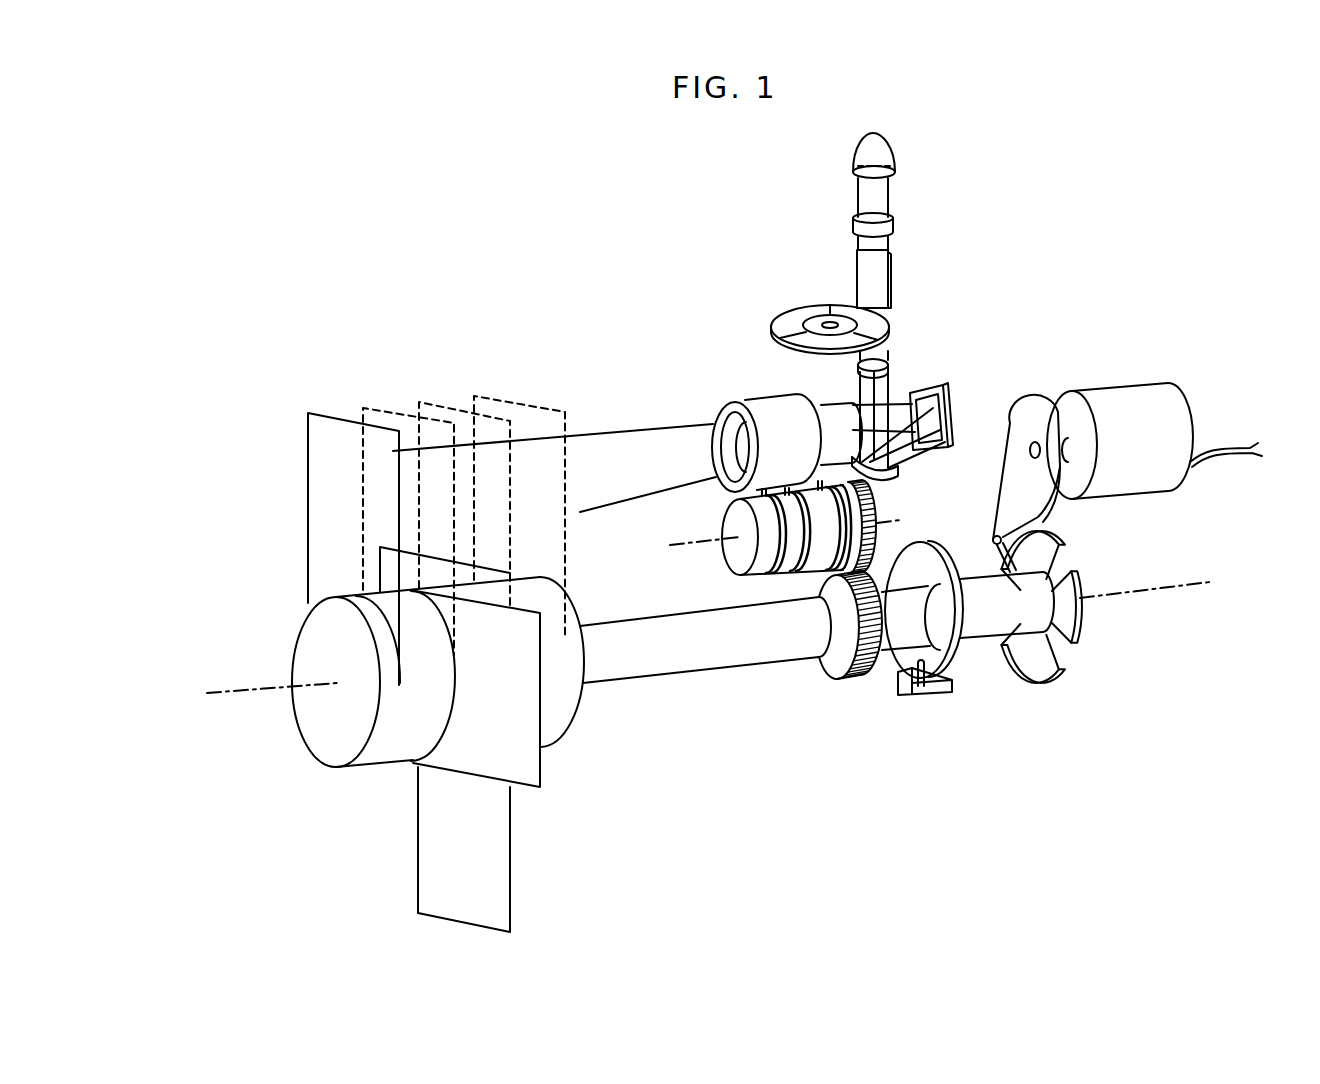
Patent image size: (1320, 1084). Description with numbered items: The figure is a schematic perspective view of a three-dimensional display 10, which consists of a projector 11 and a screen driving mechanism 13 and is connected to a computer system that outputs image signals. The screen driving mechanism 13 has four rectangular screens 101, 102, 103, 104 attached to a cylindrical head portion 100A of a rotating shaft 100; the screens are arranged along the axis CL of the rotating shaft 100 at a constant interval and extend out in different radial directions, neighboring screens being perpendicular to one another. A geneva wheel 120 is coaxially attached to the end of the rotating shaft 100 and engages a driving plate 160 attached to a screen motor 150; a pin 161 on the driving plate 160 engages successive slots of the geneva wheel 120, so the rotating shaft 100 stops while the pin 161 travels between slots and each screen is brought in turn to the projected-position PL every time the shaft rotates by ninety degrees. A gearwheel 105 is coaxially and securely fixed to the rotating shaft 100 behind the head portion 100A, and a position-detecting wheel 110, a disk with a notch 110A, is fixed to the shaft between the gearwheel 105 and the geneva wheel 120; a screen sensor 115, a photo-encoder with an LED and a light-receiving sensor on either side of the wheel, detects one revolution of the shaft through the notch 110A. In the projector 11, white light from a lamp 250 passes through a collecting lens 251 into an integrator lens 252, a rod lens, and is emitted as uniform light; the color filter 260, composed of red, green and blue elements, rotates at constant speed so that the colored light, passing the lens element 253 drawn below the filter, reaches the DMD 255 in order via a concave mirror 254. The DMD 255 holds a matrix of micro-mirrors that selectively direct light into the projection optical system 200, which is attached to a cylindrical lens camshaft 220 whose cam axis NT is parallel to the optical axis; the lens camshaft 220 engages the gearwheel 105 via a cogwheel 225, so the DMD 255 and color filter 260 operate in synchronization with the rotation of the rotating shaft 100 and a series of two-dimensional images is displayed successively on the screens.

The 3-D display 10 is at (226, 202).
The projector 11 is at (766, 194).
The screen driving mechanism 13 is at (446, 312).
The rotating shaft 100 is at (703, 648).
The cylindrical head portion 100A is at (328, 745).
The screen 101 is at (318, 412).
The screen 102 is at (378, 408).
The screen 103 is at (450, 403).
The screen 104 is at (527, 396).
The gearwheel 105 is at (838, 665).
The position-detecting wheel 110 is at (947, 653).
The notch 110A is at (927, 705).
The screen sensor 115 is at (900, 695).
The geneva wheel 120 is at (1068, 625).
The screen motor 150 is at (1110, 386).
The driving plate 160 is at (1037, 400).
The pin 161 is at (995, 540).
The projection optical system 200 is at (770, 410).
The lens camshaft 220 is at (737, 560).
The cogwheel 225 is at (875, 505).
The lamp 250 is at (896, 157).
The collecting lens 251 is at (894, 228).
The integrator lens 252 is at (892, 282).
The lens 253 is at (895, 368).
The concave mirror 254 is at (900, 470).
The DMD 255 is at (950, 405).
The color filter 260 is at (797, 318).
The projected-position PL is at (513, 440).
The cam axis NT is at (672, 542).
The axis CL is at (222, 690).